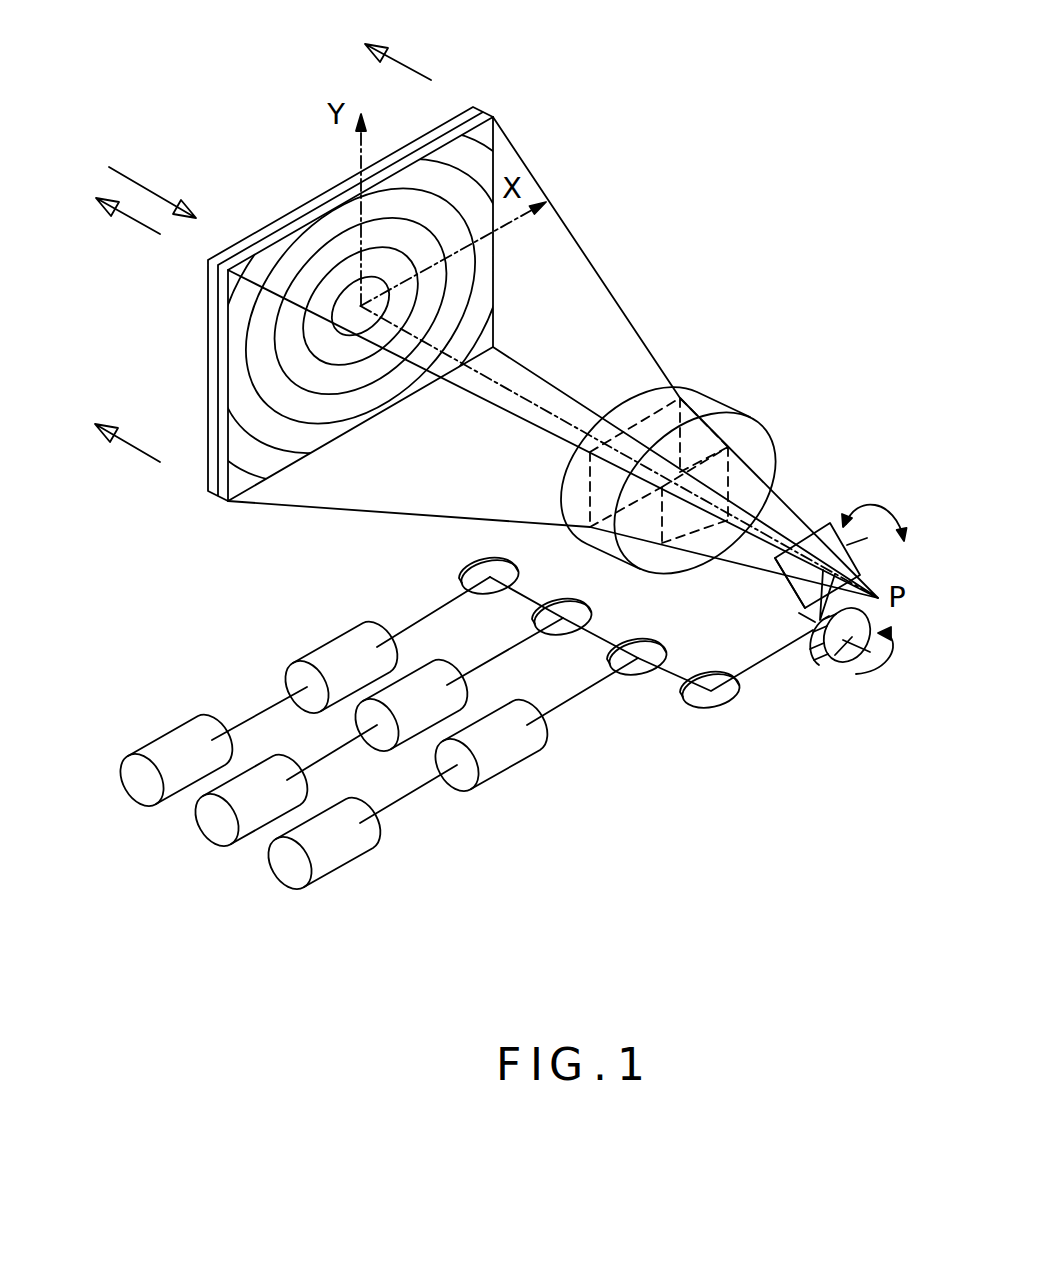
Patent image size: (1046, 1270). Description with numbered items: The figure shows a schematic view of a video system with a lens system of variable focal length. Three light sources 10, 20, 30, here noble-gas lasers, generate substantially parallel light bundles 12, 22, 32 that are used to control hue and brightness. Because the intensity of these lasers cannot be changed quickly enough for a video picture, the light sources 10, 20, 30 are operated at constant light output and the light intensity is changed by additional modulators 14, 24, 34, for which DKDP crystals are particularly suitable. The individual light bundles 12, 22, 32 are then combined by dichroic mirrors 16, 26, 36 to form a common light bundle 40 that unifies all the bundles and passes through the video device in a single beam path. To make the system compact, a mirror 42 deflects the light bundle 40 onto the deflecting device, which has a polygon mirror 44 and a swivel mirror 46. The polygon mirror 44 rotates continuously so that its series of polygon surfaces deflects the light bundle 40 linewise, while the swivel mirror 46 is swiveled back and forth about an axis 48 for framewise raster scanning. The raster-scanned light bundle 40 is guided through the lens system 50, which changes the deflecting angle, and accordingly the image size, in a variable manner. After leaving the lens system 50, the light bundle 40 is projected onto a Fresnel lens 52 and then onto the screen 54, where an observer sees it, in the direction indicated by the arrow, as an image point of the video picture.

The light source 10 is at (322, 886).
The light bundle 12 is at (400, 803).
The modulator 14 is at (470, 790).
The dichroic mirror 16 is at (637, 675).
The light source 20 is at (245, 842).
The light bundle 22 is at (313, 760).
The modulator 24 is at (413, 738).
The dichroic mirror 26 is at (582, 630).
The light source 30 is at (172, 792).
The light bundle 32 is at (256, 718).
The modulator 34 is at (330, 654).
The dichroic mirror 36 is at (497, 594).
The common light bundle 40 is at (658, 698).
The mirror 42 is at (722, 716).
The polygon mirror 44 is at (850, 668).
The swivel mirror 46 is at (830, 522).
The axis 48 is at (790, 572).
The lens system 50 is at (700, 388).
The Fresnel lens 52 is at (487, 135).
The screen 54 is at (479, 107).